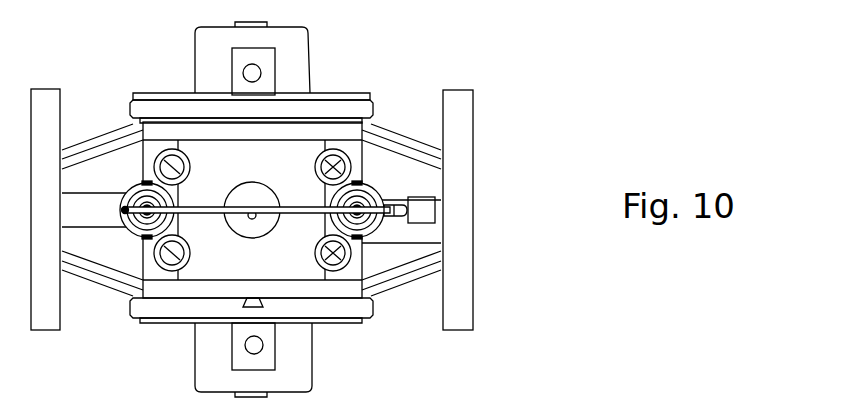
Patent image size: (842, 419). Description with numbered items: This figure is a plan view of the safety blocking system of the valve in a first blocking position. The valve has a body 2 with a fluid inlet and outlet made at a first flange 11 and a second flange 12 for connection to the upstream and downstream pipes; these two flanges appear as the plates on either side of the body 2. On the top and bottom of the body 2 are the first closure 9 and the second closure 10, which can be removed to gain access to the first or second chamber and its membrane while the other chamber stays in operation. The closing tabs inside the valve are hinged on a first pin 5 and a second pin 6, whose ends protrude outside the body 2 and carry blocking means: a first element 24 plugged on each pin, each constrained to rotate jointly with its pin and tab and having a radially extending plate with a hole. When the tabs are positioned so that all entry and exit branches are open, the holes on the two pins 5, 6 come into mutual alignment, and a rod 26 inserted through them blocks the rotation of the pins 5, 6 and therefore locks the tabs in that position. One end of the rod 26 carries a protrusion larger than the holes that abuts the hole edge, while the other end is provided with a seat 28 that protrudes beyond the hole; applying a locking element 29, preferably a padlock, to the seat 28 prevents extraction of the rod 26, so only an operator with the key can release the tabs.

The body 2 is at (82, 268).
The first pin 5 is at (137, 208).
The second pin 6 is at (364, 206).
The first closure 9 is at (302, 65).
The second closure 10 is at (297, 358).
The first flange 11 is at (42, 96).
The second flange 12 is at (457, 98).
The first element 24 is at (123, 210).
The rod 26 is at (213, 208).
The seat 28 is at (393, 214).
The locking element 29 is at (425, 214).